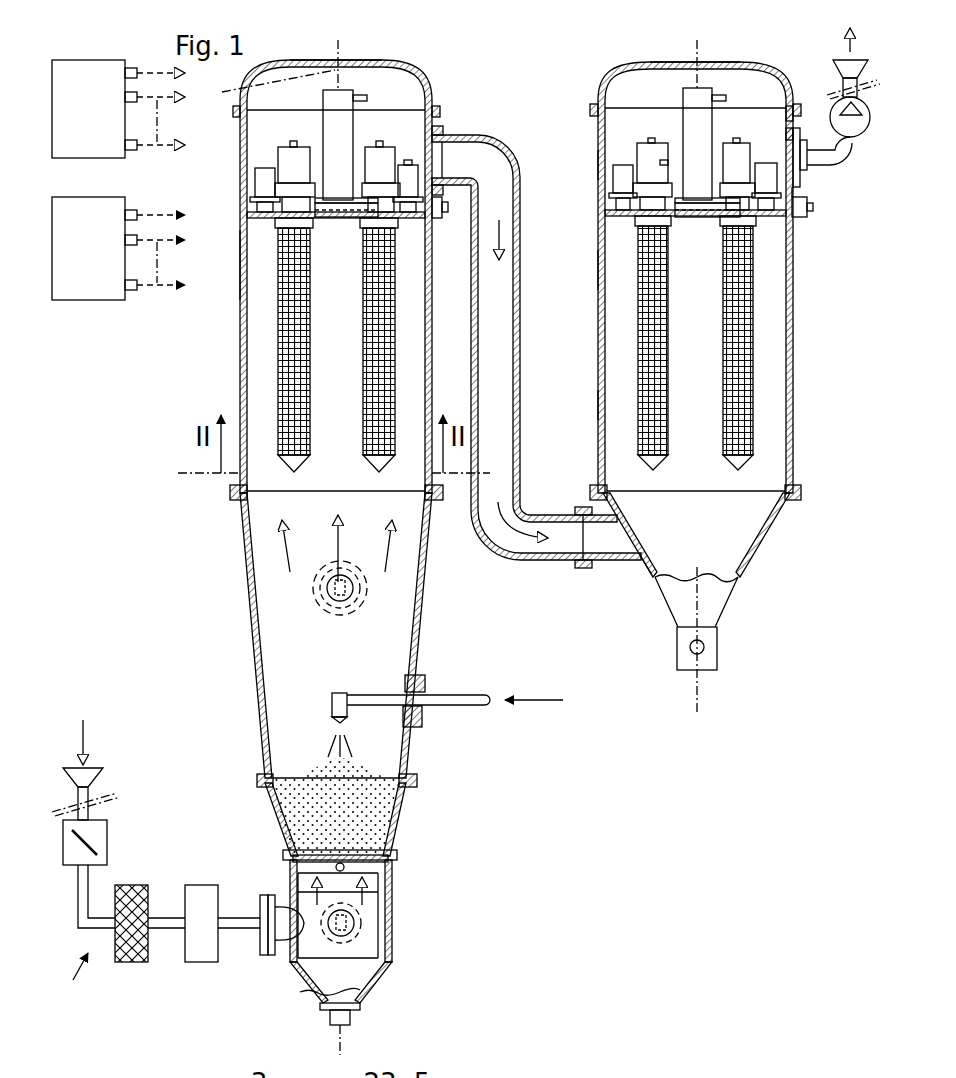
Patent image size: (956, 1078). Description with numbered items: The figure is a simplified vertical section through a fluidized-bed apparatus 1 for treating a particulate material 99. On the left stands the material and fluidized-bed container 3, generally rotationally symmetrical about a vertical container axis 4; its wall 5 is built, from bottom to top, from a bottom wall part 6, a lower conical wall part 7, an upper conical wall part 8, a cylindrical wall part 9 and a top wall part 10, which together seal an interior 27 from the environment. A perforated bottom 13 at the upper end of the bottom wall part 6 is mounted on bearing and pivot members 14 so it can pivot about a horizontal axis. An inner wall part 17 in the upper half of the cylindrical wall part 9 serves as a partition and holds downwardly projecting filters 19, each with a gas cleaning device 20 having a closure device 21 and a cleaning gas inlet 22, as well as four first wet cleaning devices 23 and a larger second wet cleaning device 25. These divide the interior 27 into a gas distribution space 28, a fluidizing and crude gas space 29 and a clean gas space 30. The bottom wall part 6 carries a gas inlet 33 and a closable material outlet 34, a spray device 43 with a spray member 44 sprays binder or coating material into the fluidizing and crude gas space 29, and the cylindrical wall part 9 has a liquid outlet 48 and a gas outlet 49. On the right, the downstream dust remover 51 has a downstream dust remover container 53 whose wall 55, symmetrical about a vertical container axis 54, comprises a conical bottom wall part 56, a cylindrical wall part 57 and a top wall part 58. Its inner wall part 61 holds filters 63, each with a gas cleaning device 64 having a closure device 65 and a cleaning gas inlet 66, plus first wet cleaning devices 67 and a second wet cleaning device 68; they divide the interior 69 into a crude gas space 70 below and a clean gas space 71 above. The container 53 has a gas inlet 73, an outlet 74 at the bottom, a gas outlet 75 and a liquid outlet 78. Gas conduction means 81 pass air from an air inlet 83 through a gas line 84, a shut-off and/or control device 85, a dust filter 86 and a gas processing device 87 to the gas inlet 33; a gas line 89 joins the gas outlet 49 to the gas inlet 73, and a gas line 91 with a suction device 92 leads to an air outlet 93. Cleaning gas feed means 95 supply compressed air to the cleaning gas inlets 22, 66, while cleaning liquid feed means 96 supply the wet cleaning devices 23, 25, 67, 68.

The fluidized-bed apparatus 1 is at (60, 982).
The material and fluidized-bed container 3 is at (243, 530).
The vertical container axis 4 is at (269, 87).
The wall 5 is at (248, 573).
The bottom wall part 6 is at (393, 912).
The lower conical wall part 7 is at (398, 823).
The upper conical wall part 8 is at (283, 625).
The cylindrical wall part 9 is at (240, 287).
The top wall part 10 is at (298, 62).
The perforated bottom 13 is at (292, 843).
The bearing and pivot members 14 is at (333, 865).
The inner wall part 17 is at (283, 218).
The filter 19 is at (363, 450).
The gas cleaning device 20 is at (275, 150).
The closure device 21 is at (372, 140).
The cleaning gas inlet 22 is at (407, 167).
The first wet cleaning device 23 is at (258, 180).
The second wet cleaning device 25 is at (342, 100).
The interior 27 is at (318, 962).
The gas distribution space 28 is at (340, 962).
The fluidizing and crude gas space 29 is at (250, 603).
The clean gas space 30 is at (430, 107).
The gas inlet 33 is at (275, 950).
The closable material outlet 34 is at (352, 1022).
The spray device 43 is at (443, 710).
The spray member 44 is at (330, 700).
The liquid outlet 48 is at (436, 220).
The gas outlet 49 is at (445, 130).
The downstream dust remover 51 is at (612, 72).
The downstream dust remover container 53 is at (598, 163).
The vertical container axis 54 is at (700, 713).
The wall 55 is at (602, 267).
The conical bottom wall part 56 is at (645, 572).
The cylindrical wall part 57 is at (598, 400).
The top wall part 58 is at (637, 67).
The inner wall part 61 is at (633, 227).
The filter 63 is at (723, 448).
The gas cleaning device 64 is at (628, 145).
The closure device 65 is at (665, 143).
The cleaning gas inlet 66 is at (650, 140).
The first wet cleaning device 67 is at (765, 167).
The second wet cleaning device 68 is at (703, 90).
The interior 69 is at (677, 565).
The crude gas space 70 is at (757, 517).
The clean gas space 71 is at (768, 117).
The gas inlet 73 is at (583, 568).
The outlet 74 is at (717, 645).
The gas outlet 75 is at (797, 177).
The liquid outlet 78 is at (795, 220).
The gas conduction means 81 is at (58, 762).
The air inlet 83 is at (100, 778).
The gas line 84 is at (95, 810).
The shut-off and/or control device 85 is at (107, 835).
The dust filter 86 is at (120, 887).
The gas processing device 87 is at (205, 885).
The gas line 89 is at (517, 180).
The gas line 91 is at (830, 168).
The suction device 92 is at (867, 133).
The air outlet 93 is at (858, 55).
The cleaning gas feed means 95 is at (93, 65).
The cleaning liquid feed means 96 is at (103, 293).
The particulate material 99 is at (383, 803).